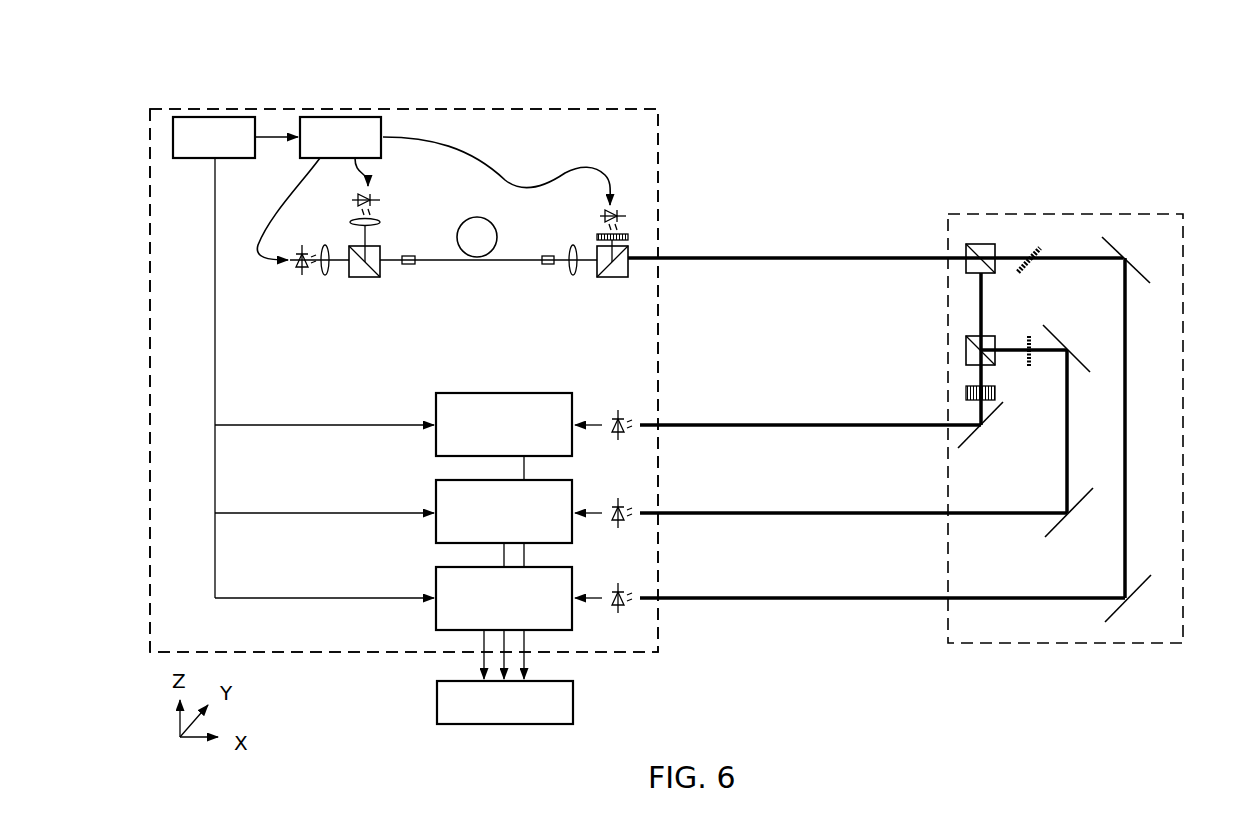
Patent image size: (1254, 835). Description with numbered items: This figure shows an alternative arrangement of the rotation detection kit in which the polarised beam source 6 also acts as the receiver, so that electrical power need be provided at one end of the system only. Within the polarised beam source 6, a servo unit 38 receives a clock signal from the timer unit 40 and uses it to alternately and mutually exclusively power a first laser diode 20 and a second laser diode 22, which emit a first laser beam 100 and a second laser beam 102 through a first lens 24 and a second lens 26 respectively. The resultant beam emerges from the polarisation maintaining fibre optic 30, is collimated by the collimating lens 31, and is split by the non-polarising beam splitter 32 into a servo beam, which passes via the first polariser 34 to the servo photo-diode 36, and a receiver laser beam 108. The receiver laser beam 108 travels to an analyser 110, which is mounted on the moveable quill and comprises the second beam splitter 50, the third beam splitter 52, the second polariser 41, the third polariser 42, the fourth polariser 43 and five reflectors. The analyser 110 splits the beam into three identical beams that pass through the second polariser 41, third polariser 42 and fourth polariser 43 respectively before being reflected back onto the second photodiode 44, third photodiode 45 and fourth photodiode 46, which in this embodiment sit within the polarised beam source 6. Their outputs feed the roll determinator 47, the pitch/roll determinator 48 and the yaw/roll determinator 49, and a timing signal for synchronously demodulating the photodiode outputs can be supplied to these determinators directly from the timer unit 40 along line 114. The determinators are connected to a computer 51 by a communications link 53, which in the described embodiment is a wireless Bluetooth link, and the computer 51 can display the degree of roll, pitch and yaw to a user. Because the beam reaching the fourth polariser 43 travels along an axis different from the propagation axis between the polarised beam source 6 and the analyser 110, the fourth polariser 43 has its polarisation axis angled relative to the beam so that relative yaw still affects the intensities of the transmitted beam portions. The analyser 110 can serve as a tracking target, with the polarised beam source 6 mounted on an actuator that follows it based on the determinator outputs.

The polarised beam source 6 is at (400, 108).
The first laser diode 20 is at (297, 270).
The second laser diode 22 is at (372, 197).
The first lens 24 is at (325, 277).
The second lens 26 is at (378, 219).
The polarisation maintaining fibre optic 30 is at (485, 218).
The collimating lens 31 is at (573, 278).
The non-polarising beam splitter 32 is at (630, 250).
The first polariser 34 is at (630, 240).
The servo photo-diode 36 is at (620, 212).
The servo unit 38 is at (335, 117).
The timer unit 40 is at (218, 117).
The second polariser 41 is at (1030, 335).
The third polariser 42 is at (1037, 247).
The fourth polariser 43 is at (966, 390).
The second photodiode 44 is at (627, 505).
The third photodiode 45 is at (627, 590).
The fourth photodiode 46 is at (627, 417).
The roll determinator unit 47 is at (436, 497).
The pitch/roll determinator unit 48 is at (436, 583).
The yaw/roll determinator unit 49 is at (436, 410).
The second beam splitter 50 is at (966, 254).
The computer 51 is at (437, 705).
The third beam splitter 52 is at (966, 347).
The communications link 53 is at (580, 670).
The first laser beam 100 is at (343, 278).
The second laser beam 102 is at (377, 236).
The receiver laser beam 108 is at (797, 256).
The analyser 110 is at (975, 214).
The line 114 is at (215, 330).